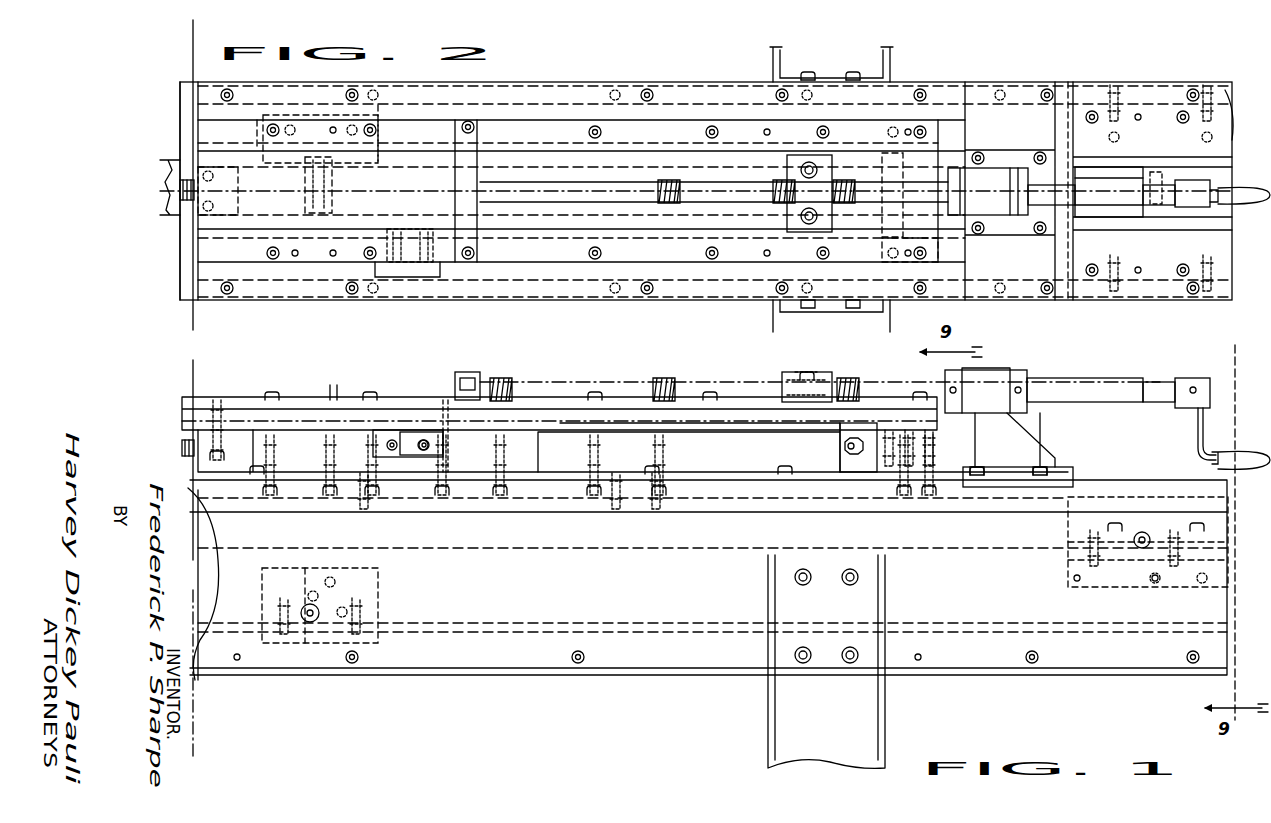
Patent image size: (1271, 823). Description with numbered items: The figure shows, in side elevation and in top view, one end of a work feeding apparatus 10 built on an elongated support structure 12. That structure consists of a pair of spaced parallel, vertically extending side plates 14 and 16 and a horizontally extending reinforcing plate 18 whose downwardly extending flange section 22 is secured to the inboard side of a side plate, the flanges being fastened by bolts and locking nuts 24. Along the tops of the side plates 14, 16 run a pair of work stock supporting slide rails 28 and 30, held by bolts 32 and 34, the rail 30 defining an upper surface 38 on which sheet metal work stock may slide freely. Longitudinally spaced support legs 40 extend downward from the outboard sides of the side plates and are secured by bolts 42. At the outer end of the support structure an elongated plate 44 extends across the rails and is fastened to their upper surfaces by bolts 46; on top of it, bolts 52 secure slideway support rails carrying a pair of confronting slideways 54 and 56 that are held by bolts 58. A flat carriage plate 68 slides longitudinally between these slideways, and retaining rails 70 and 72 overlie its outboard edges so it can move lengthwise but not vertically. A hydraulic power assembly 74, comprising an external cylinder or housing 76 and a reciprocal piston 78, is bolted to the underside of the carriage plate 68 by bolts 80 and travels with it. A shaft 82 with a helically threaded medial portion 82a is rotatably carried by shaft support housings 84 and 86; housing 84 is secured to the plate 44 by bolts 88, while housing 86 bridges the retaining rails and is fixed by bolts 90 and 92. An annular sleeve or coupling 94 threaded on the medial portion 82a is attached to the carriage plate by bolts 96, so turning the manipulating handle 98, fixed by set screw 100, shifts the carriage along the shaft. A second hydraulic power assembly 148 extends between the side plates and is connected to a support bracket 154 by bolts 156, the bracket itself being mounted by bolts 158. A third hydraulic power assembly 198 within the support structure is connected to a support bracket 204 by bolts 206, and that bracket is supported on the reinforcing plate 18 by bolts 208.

In FIG. 2, the work feeding apparatus 10 is at (367, 372).
In FIG. 1, the elongated support structure 12 is at (718, 692).
In FIG. 2, the side plate 14 is at (965, 80).
In FIG. 2, the side plate 16 is at (582, 303).
In FIG. 1, the side plate 16 is at (522, 672).
In FIG. 1, the horizontally extending reinforcing plate 18 is at (642, 628).
In FIG. 1, the flange section 22 is at (618, 662).
In FIG. 1, the bolts and locking nuts 24 is at (350, 665).
In FIG. 2, the work stock supporting slide rail 28 is at (615, 80).
In FIG. 2, the work stock supporting slide rail 30 is at (556, 303).
In FIG. 1, the work stock supporting slide rail 30 is at (1108, 487).
In FIG. 2, the bolts 32 is at (502, 90).
In FIG. 2, the bolts 34 is at (238, 302).
In FIG. 1, the bolts 34 is at (628, 525).
In FIG. 1, the upper surface 38 is at (762, 488).
In FIG. 2, the support legs 40 is at (895, 50).
In FIG. 1, the support legs 40 is at (888, 722).
In FIG. 2, the bolts 42 is at (855, 70).
In FIG. 1, the bolts 42 is at (848, 645).
In FIG. 2, the elongated plate 44 is at (1080, 248).
In FIG. 1, the elongated plate 44 is at (1068, 468).
In FIG. 2, the bolts 46 is at (775, 95).
In FIG. 1, the bolts 46 is at (782, 470).
In FIG. 1, the bolts 52 is at (268, 502).
In FIG. 2, the slideway 54 is at (714, 191).
In FIG. 2, the slideway 56 is at (747, 191).
In FIG. 1, the slideway 56 is at (237, 398).
In FIG. 2, the bolts 58 is at (708, 132).
In FIG. 2, the carriage plate 68 is at (947, 160).
In FIG. 2, the retaining rail 70 is at (812, 120).
In FIG. 2, the retaining rail 72 is at (868, 268).
In FIG. 1, the retaining rail 72 is at (566, 480).
In FIG. 2, the hydraulic power assembly 74 is at (405, 150).
In FIG. 1, the hydraulic power assembly 74 is at (822, 478).
In FIG. 1, the external cylinder or housing 76 is at (732, 440).
In FIG. 2, the reciprocal piston 78 is at (178, 190).
In FIG. 1, the reciprocal piston 78 is at (180, 447).
In FIG. 2, the bolts 80 is at (239, 191).
In FIG. 1, the bolts 80 is at (218, 396).
In FIG. 2, the shaft 82 is at (1115, 182).
In FIG. 1, the shaft 82 is at (876, 378).
In FIG. 2, the helically threaded medial portion 82a is at (658, 237).
In FIG. 1, the helically threaded medial portion 82a is at (658, 384).
In FIG. 2, the shaft support housing 84 is at (1032, 208).
In FIG. 1, the shaft support housing 84 is at (1032, 367).
In FIG. 2, the shaft support housing 86 is at (450, 183).
In FIG. 1, the shaft support housing 86 is at (475, 370).
In FIG. 2, the bolts 88 is at (1038, 150).
In FIG. 1, the bolts 88 is at (1032, 460).
In FIG. 2, the bolt 90 is at (468, 120).
In FIG. 2, the bolt 92 is at (460, 250).
In FIG. 1, the bolt 92 is at (452, 382).
In FIG. 2, the annular sleeve or coupling 94 is at (830, 178).
In FIG. 1, the annular sleeve or coupling 94 is at (836, 372).
In FIG. 2, the bolts 96 is at (802, 160).
In FIG. 2, the manipulating handle 98 is at (1245, 205).
In FIG. 1, the manipulating handle 98 is at (1215, 422).
In FIG. 1, the set screw 100 is at (1194, 380).
In FIG. 1, the hydraulic power assembly 148 is at (993, 555).
In FIG. 2, the support bracket 154 is at (1236, 160).
In FIG. 1, the support bracket 154 is at (1065, 508).
In FIG. 2, the bolts 156 is at (1160, 215).
In FIG. 1, the bolts 158 is at (1208, 528).
In FIG. 1, the hydraulic power assembly 198 is at (199, 612).
In FIG. 1, the support bracket 204 is at (380, 595).
In FIG. 1, the bolts 206 is at (345, 583).
In FIG. 1, the bolts 208 is at (285, 645).